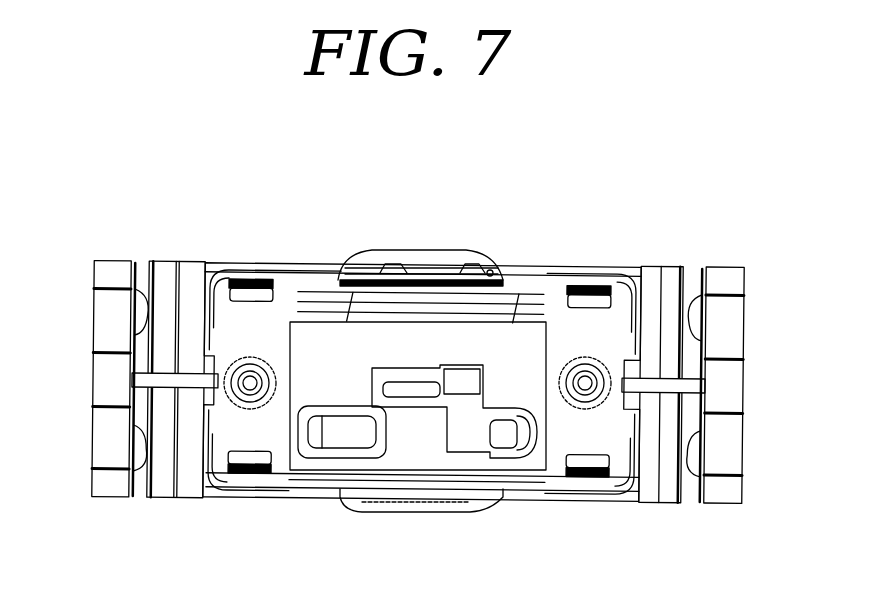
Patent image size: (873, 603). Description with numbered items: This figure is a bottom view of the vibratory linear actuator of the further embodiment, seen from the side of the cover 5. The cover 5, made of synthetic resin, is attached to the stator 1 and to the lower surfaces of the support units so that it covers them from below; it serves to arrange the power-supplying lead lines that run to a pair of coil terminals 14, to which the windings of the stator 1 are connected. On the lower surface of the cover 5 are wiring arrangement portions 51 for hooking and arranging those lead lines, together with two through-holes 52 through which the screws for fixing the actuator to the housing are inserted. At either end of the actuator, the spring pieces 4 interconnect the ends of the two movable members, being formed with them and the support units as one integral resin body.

The stator 1 is at (425, 277).
The spring piece 4 is at (104, 333).
The cover 5 is at (551, 300).
The coil terminals 14 is at (373, 270).
The wiring arrangement portions 51 is at (357, 433).
The through-holes 52 is at (245, 358).